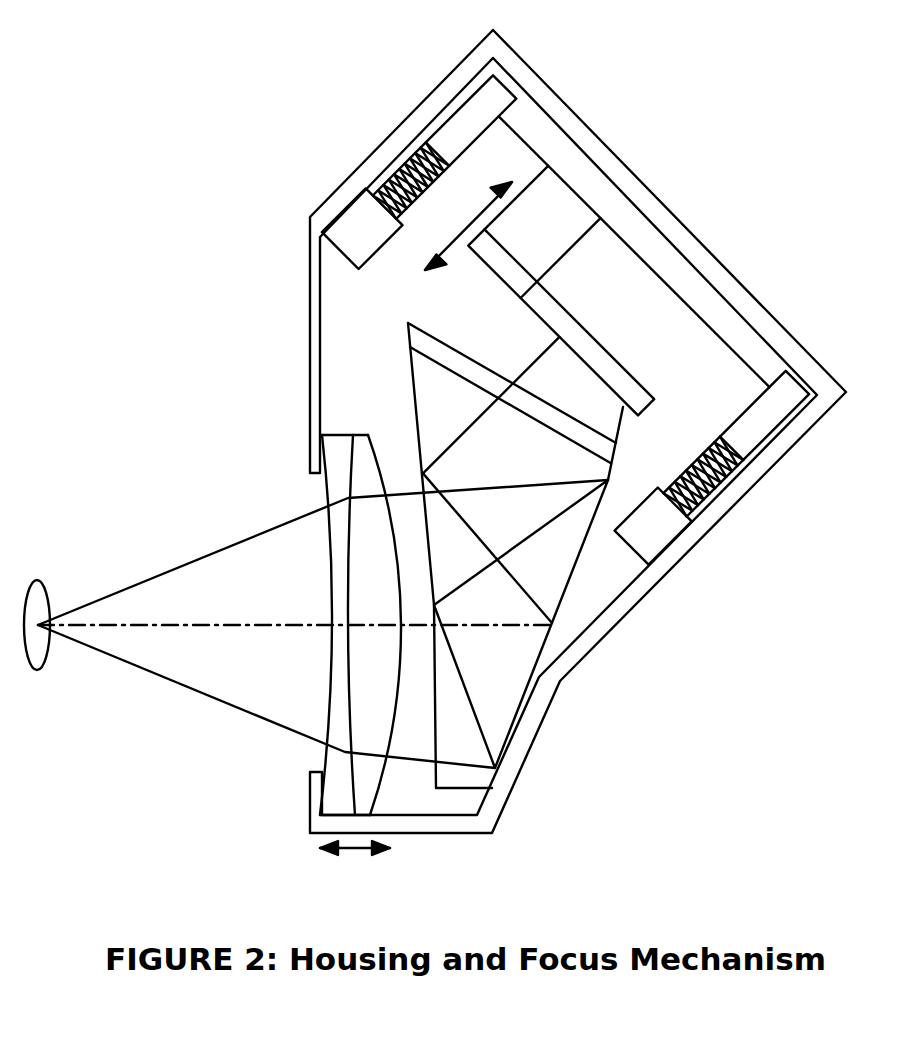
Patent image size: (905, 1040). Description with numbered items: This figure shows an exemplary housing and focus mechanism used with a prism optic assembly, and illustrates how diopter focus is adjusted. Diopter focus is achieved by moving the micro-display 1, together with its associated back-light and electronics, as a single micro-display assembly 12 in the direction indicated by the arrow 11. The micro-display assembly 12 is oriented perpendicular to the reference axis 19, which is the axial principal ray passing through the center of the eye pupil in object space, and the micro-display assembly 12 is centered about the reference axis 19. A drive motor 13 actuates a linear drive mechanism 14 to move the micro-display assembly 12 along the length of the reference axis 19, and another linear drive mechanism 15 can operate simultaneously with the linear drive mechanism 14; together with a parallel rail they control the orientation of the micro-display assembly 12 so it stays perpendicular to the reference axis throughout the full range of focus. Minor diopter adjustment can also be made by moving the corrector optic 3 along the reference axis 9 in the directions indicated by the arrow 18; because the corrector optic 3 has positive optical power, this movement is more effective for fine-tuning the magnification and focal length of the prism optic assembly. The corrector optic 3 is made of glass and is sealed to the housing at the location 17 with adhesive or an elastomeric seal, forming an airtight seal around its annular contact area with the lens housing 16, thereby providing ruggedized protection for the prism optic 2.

The micro-display 1 is at (587, 347).
The prism optic 2 is at (492, 675).
The corrector optic 3 is at (343, 445).
The reference axis 9 is at (163, 627).
The arrow 11 is at (466, 226).
The micro-display assembly 12 is at (555, 253).
The drive motor 13 is at (363, 228).
The linear drive mechanism 14 is at (390, 163).
The linear drive mechanism 15 is at (743, 425).
The lens housing 16 is at (617, 622).
The location 17 is at (317, 467).
The arrow 18 is at (355, 870).
The reference axis 19 is at (525, 370).